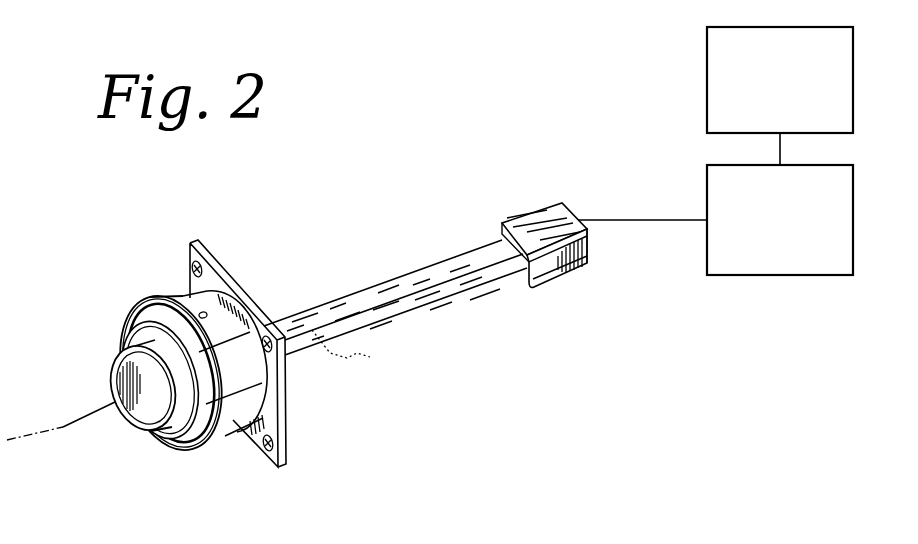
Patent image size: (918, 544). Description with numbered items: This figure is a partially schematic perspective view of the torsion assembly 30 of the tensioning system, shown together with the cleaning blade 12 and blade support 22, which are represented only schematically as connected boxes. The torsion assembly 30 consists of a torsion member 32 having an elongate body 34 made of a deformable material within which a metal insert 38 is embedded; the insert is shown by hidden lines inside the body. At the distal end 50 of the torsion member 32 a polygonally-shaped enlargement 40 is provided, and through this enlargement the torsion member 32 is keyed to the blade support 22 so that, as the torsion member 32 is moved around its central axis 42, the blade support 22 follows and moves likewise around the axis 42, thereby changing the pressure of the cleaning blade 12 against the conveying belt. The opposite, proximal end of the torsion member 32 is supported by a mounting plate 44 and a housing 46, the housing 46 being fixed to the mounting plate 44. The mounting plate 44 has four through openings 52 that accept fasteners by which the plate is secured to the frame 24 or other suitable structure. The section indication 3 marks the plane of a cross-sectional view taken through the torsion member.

The cleaning blade 12 is at (768, 122).
The blade support 22 is at (768, 262).
The frame 24 is at (248, 432).
The torsion assembly 30 is at (427, 251).
The torsion member 32 is at (397, 283).
The elongate body 34 is at (440, 295).
The metal insert 38 is at (358, 350).
The polygonally-shaped enlargement 40 is at (533, 224).
The central axis 42 is at (25, 440).
The mounting plate 44 is at (273, 382).
The housing 46 is at (240, 328).
The distal end 50 is at (589, 245).
The through openings 52 is at (198, 262).
The section line 3- 3 is at (343, 325).